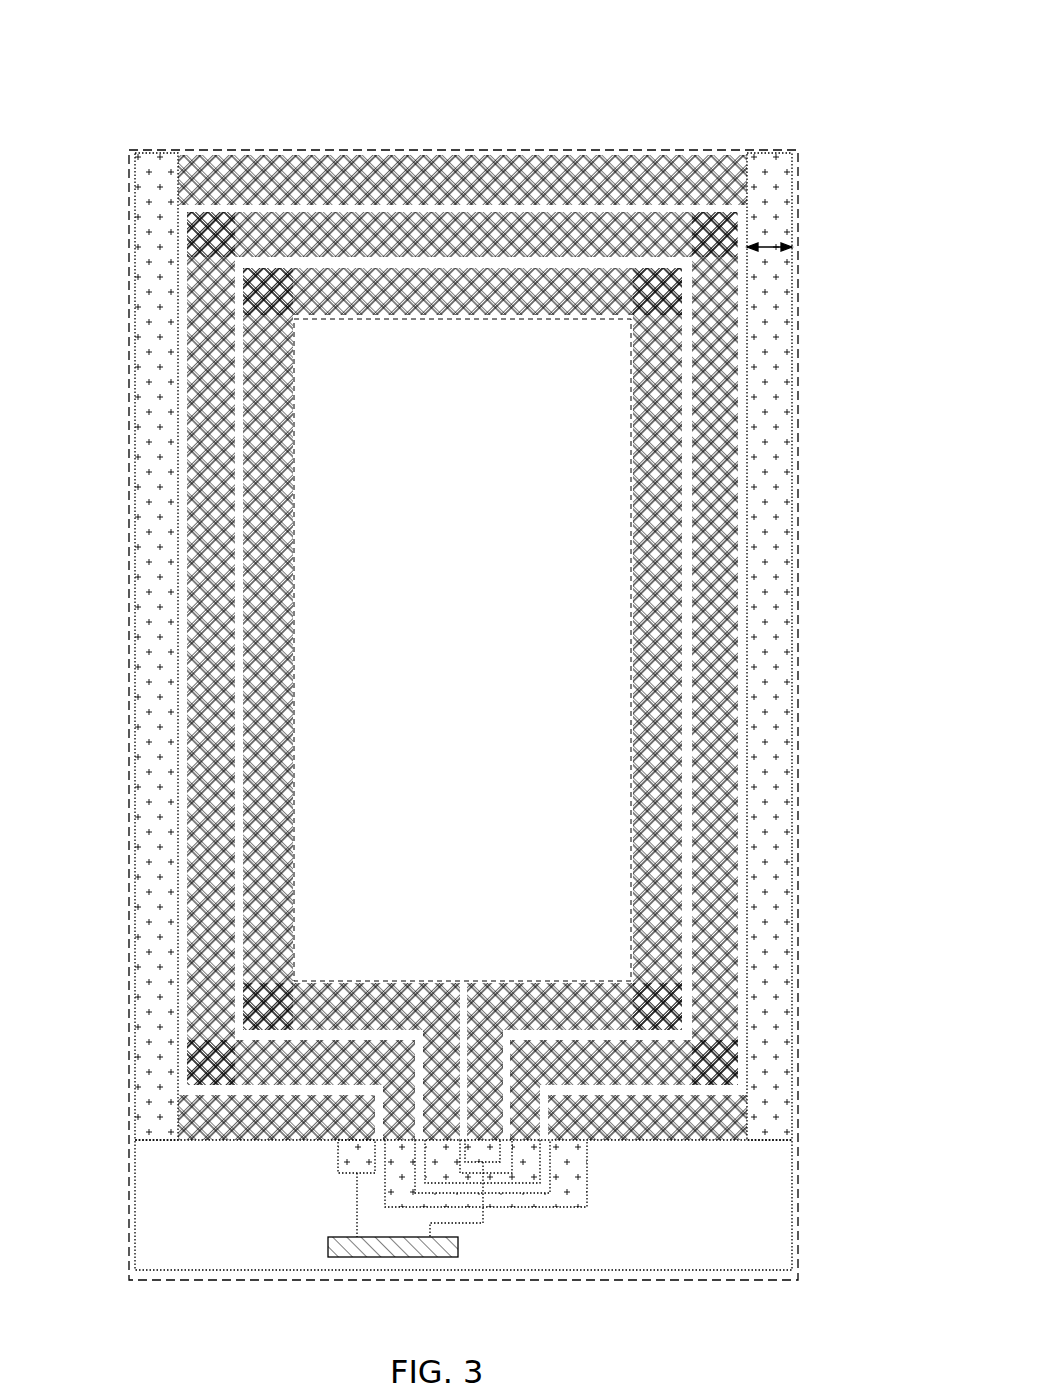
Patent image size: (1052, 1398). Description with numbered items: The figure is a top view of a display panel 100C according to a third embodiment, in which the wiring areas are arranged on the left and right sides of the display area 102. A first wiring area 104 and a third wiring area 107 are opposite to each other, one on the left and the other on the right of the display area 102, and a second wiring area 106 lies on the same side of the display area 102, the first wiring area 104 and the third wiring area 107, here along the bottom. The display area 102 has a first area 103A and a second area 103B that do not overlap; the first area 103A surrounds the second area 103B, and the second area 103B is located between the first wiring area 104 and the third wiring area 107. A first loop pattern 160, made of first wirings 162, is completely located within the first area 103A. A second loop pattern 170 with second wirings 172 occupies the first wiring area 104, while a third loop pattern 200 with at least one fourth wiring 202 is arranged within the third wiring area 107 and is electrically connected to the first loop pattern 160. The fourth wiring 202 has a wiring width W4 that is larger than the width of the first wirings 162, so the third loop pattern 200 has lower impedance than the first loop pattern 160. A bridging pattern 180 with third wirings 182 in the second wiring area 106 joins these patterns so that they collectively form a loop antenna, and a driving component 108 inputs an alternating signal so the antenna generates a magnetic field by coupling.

The display panel 100C is at (92, 32).
The display area 102 is at (610, 138).
The first area 103A is at (480, 140).
The second area 103B is at (399, 308).
The first wiring area 104 is at (143, 140).
The second wiring area 106 is at (810, 1192).
The third wiring area 107 is at (775, 140).
The driving component 108 is at (388, 1250).
The first loop pattern 160 is at (320, 140).
The first wirings 162 is at (265, 152).
The second loop pattern 170 is at (120, 197).
The second wirings 172 is at (148, 242).
The bridging pattern 180 is at (574, 1222).
The third wirings 182 is at (575, 1172).
The third loop pattern 200 is at (804, 172).
The fourth wiring 202 is at (770, 200).
The wiring width W4 is at (776, 247).